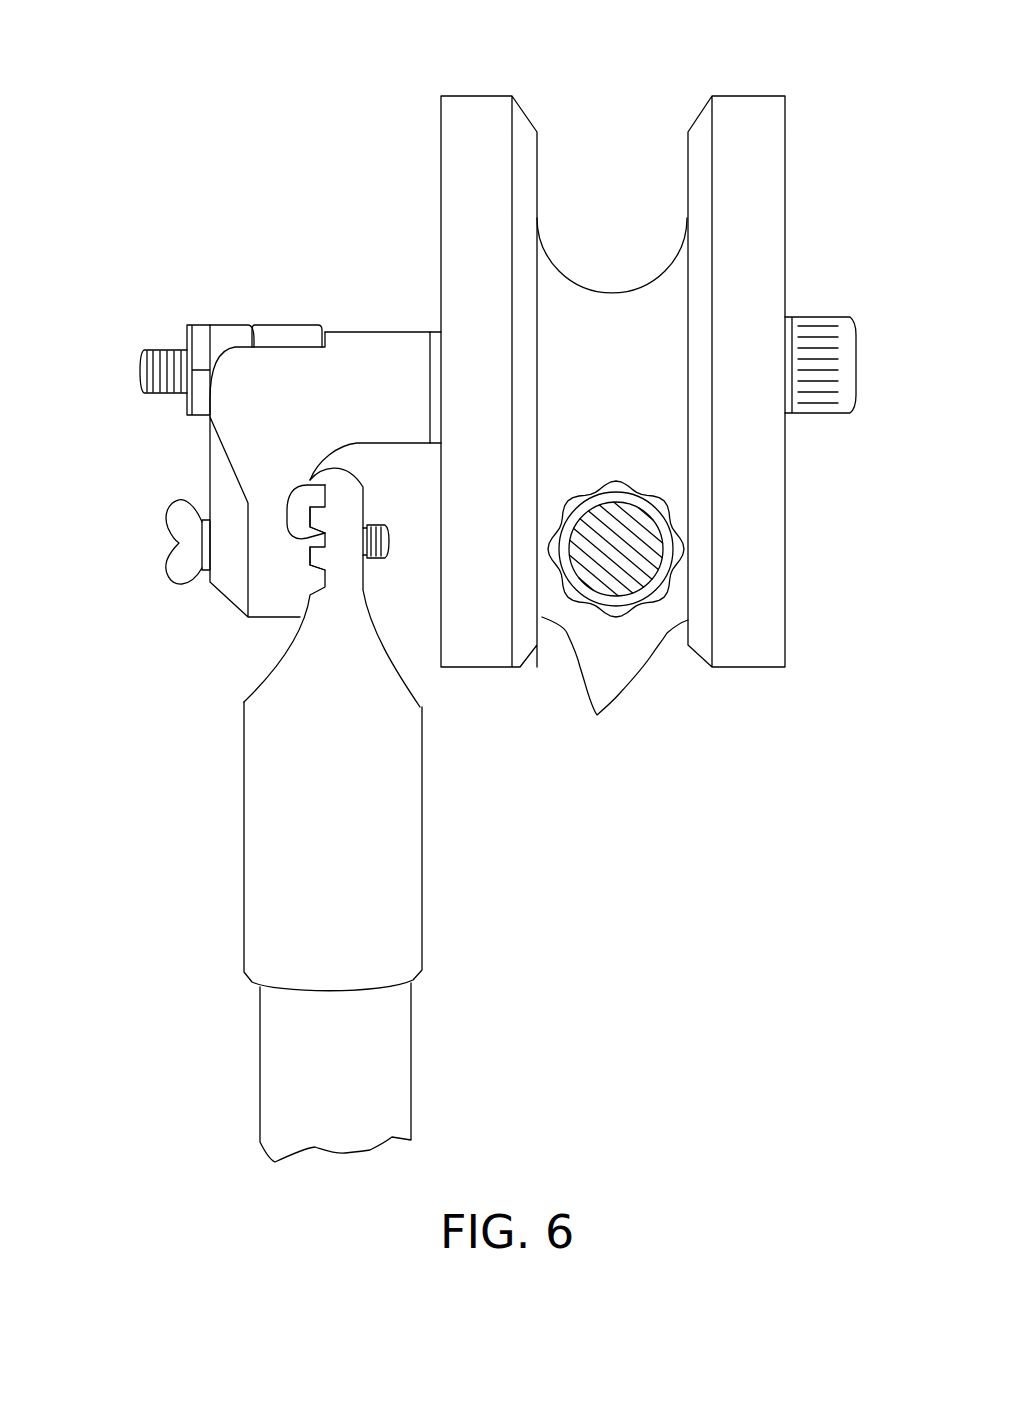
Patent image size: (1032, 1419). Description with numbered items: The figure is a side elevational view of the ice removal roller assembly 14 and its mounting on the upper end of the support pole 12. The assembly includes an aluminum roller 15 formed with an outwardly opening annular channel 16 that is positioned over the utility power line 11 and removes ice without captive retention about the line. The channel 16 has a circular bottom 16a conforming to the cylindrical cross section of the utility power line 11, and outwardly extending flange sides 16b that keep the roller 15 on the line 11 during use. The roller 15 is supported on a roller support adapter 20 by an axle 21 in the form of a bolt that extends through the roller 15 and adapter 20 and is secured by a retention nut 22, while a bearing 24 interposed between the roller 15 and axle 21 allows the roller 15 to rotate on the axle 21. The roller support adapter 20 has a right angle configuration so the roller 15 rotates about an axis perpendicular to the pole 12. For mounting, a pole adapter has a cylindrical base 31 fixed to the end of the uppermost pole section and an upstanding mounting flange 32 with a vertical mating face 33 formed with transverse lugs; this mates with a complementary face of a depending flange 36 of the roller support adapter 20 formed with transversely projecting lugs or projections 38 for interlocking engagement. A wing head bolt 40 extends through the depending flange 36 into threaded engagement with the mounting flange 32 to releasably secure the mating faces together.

The utility power line 11 is at (627, 555).
The support pole 12 is at (362, 1043).
The ice removal roller assembly 14 is at (427, 150).
The roller 15 is at (785, 163).
The annular channel 16 is at (648, 490).
The circular bottom 16a is at (632, 483).
The flange sides 16b is at (615, 682).
The roller support adapter 20 is at (355, 358).
The axle 21 is at (807, 333).
The retention nut 22 is at (213, 340).
The bearing 24 is at (430, 378).
The cylindrical base 31 is at (385, 825).
The mounting flange 32 is at (345, 575).
The mating face 33 is at (317, 492).
The depending flange 36 is at (273, 555).
The projections 38 is at (307, 578).
The wing head bolt 40 is at (183, 513).